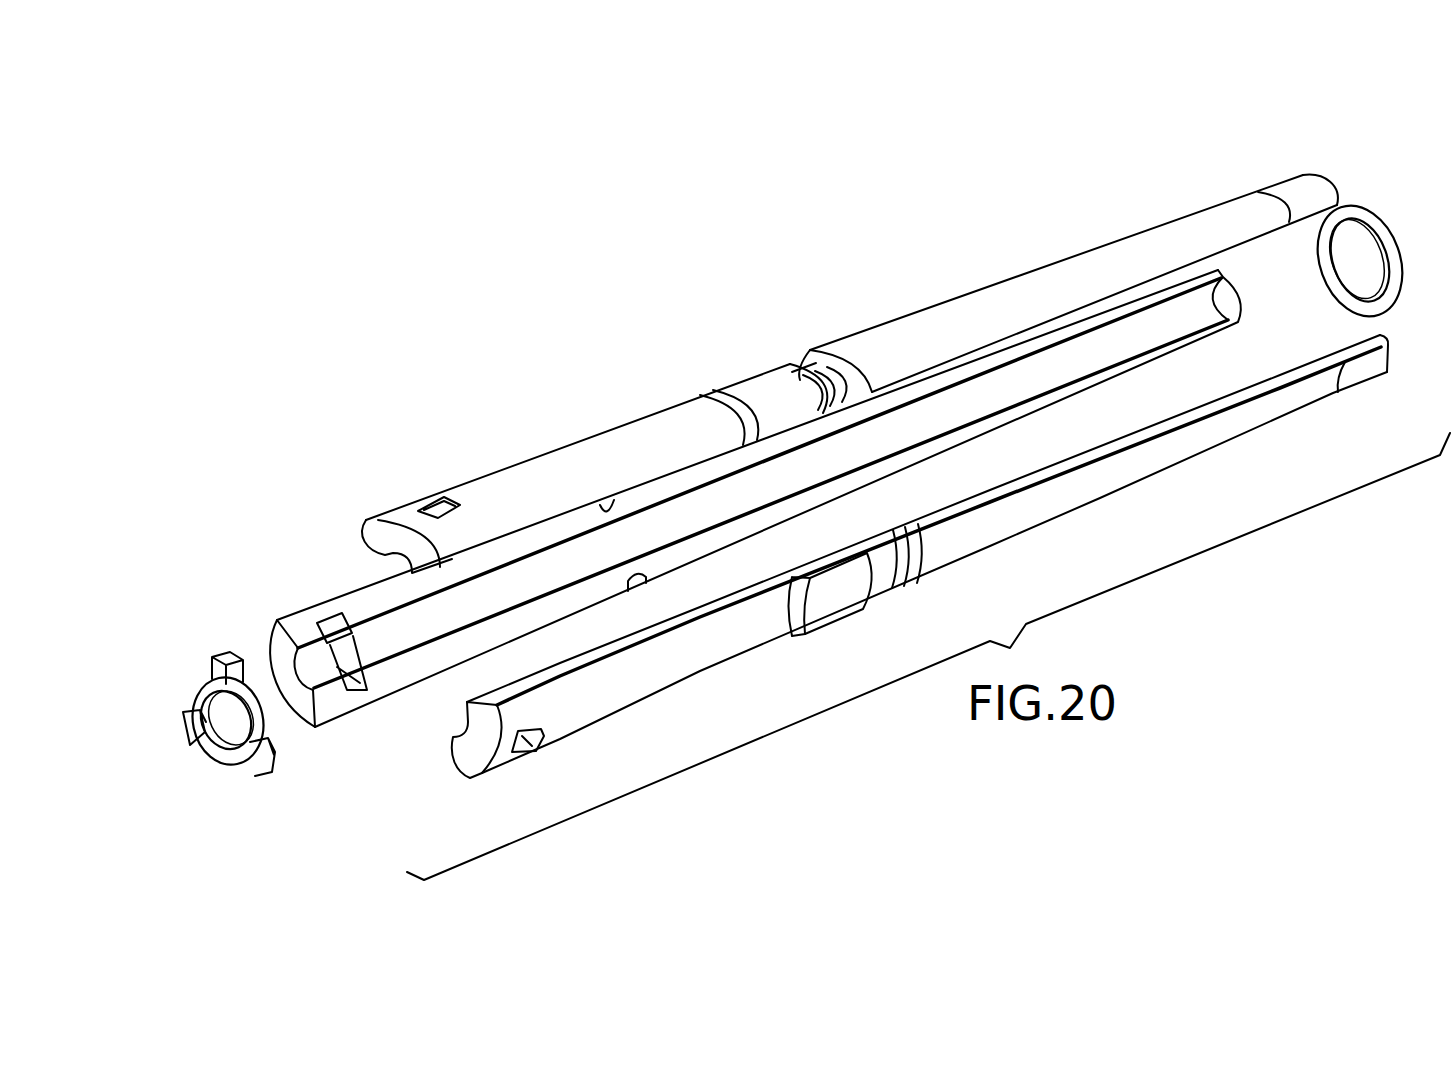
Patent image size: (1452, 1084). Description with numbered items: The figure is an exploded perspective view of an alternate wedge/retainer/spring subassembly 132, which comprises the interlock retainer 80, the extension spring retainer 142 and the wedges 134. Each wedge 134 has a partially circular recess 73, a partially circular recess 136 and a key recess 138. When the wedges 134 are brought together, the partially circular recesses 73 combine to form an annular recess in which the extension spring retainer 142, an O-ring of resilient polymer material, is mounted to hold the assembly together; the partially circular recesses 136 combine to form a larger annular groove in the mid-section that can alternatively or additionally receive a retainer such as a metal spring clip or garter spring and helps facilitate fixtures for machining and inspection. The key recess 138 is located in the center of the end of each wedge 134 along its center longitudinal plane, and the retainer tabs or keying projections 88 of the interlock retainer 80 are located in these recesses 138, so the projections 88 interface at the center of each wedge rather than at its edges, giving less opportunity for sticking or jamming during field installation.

The wedge/retainer/spring subassembly 132 is at (349, 326).
The partially circular recess 73 is at (691, 394).
The partially circular recess 136 is at (800, 367).
The extension spring retainer 142 is at (1350, 198).
The wedges 134 is at (1030, 272).
The key recess 138 is at (437, 500).
The interlock retainer 80 is at (186, 707).
The retainer tabs or keying projections 88 is at (222, 654).